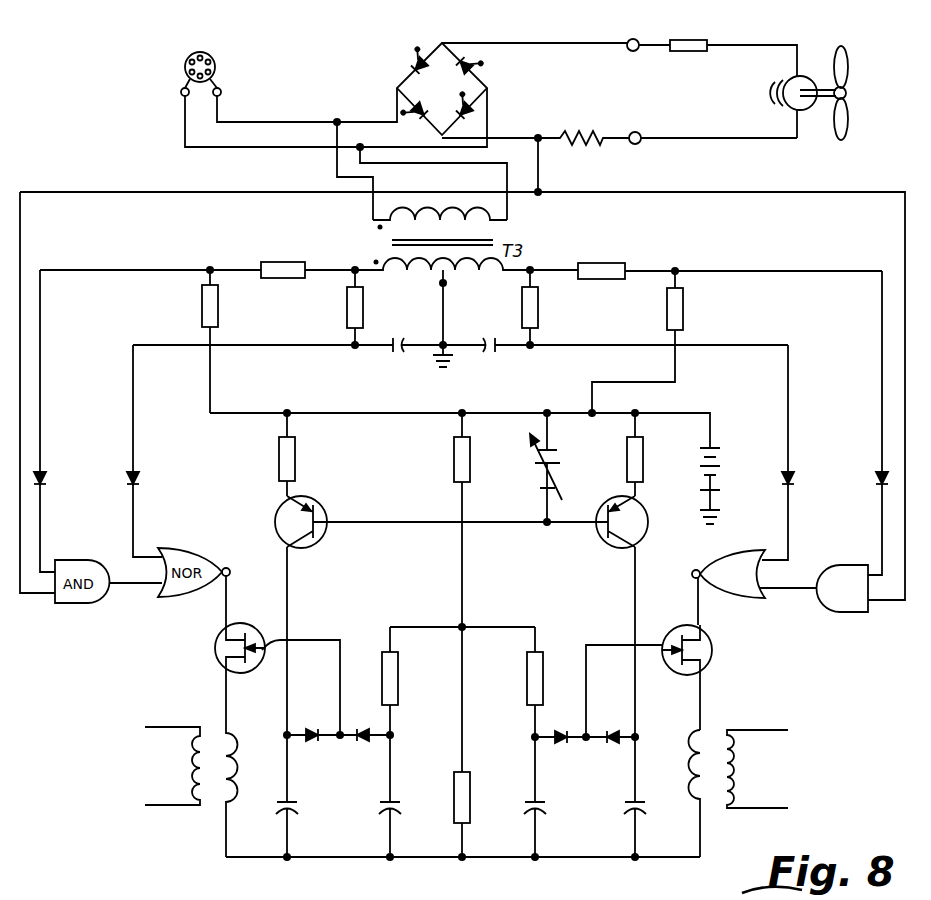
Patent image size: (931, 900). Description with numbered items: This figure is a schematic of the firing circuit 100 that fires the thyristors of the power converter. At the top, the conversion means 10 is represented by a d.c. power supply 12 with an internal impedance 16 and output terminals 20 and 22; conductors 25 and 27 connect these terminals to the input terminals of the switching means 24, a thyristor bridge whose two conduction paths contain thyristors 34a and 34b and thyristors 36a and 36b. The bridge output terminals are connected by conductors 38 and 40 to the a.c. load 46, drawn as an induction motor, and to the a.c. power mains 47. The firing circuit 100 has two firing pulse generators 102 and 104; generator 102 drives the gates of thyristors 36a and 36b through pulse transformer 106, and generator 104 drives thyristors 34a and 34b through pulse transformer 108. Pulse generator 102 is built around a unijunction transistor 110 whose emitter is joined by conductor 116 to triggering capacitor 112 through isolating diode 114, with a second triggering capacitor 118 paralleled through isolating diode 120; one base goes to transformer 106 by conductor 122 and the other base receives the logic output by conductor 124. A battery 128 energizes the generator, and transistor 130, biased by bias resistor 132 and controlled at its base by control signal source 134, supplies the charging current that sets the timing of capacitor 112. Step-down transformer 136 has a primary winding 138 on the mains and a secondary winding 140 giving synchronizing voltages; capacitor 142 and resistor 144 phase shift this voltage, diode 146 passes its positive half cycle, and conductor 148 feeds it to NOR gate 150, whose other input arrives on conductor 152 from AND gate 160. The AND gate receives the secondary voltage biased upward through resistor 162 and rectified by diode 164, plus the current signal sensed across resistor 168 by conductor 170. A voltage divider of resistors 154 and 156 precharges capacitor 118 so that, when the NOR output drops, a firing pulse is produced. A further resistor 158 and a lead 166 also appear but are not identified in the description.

The conversion means 10 is at (811, 126).
The d.c. power supply 12 is at (803, 77).
The internal impedance 16 is at (690, 52).
The output terminal 20 is at (632, 52).
The second output terminal 22 is at (636, 131).
The switching means 24 is at (478, 87).
The conductor 25 is at (543, 41).
The conductor 27 is at (689, 135).
The thyristor 34a is at (413, 58).
The thyristor 34b is at (478, 108).
The thyristor 36a is at (471, 63).
The thyristor 36b is at (425, 103).
The conductor 38 is at (280, 122).
The conductor 40 is at (222, 148).
The a.c. load 46 is at (212, 57).
The a.c. power mains 47 is at (378, 183).
The firing circuit 100 is at (446, 868).
The firing pulse generator 102 is at (608, 597).
The firing pulse generator 104 is at (330, 625).
The pulse transformer 106 is at (724, 728).
The pulse transformer 108 is at (205, 718).
The unijunction transistor 110 is at (713, 644).
The triggering capacitor 112 is at (641, 800).
The isolating diode 114 is at (611, 753).
The conductor 116 is at (628, 645).
The second triggering capacitor 118 is at (541, 805).
The isolating diode 120 is at (560, 745).
The conductor 122 is at (705, 692).
The conductor 124 is at (696, 600).
The battery 128 is at (700, 458).
The transistor 130 is at (652, 514).
The bias resistor 132 is at (623, 452).
The control signal source 134 is at (534, 476).
The step-down transformer 136 is at (500, 239).
The primary winding 138 is at (450, 207).
The secondary winding 140 is at (463, 278).
The capacitor 142 is at (495, 355).
The resistor 144 is at (538, 318).
The diode 146 is at (786, 472).
The conductor 148 is at (786, 515).
The NOR gate 150 is at (712, 558).
The conductor 152 is at (793, 592).
The resistor 154 is at (454, 457).
The resistor 156 is at (454, 791).
The resistor 158 is at (543, 668).
The AND gate 160 is at (855, 548).
The resistor 162 is at (684, 311).
The diode 164 is at (880, 472).
The conductor 166 is at (882, 508).
The resistor 168 is at (577, 130).
The conductor 170 is at (688, 192).